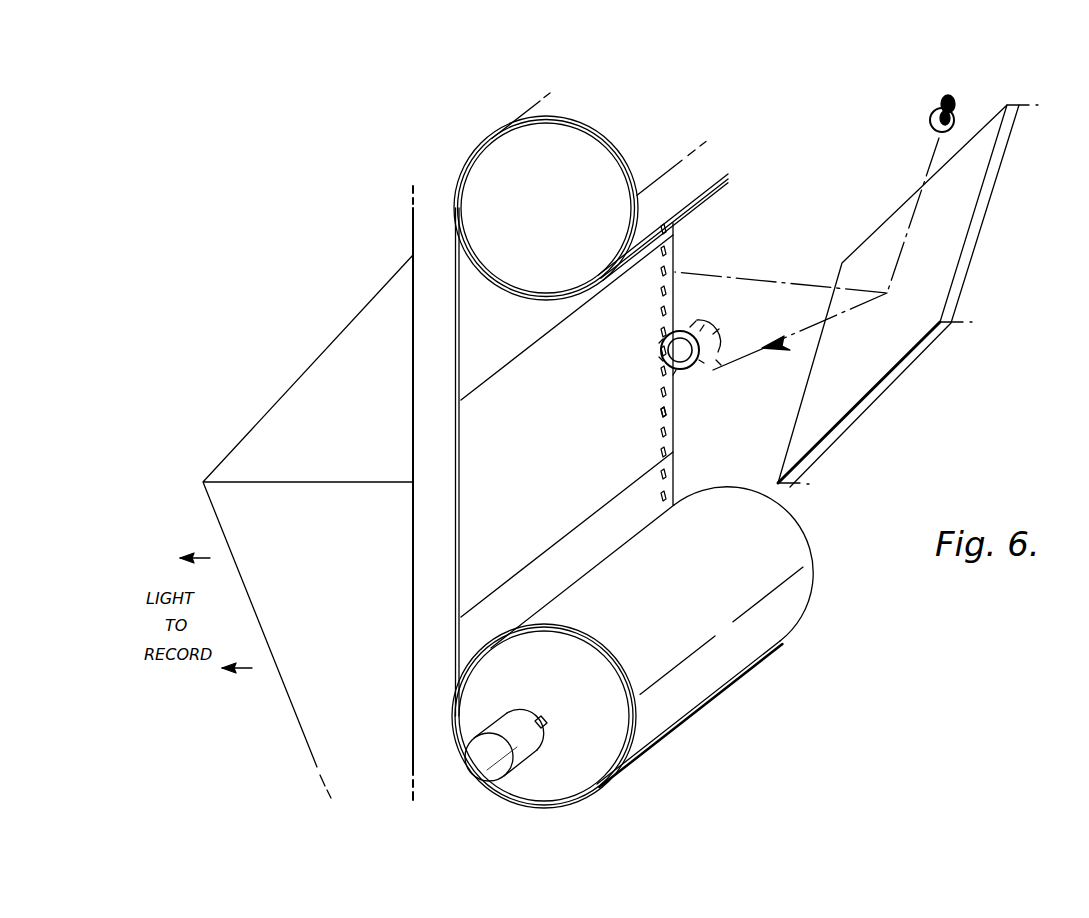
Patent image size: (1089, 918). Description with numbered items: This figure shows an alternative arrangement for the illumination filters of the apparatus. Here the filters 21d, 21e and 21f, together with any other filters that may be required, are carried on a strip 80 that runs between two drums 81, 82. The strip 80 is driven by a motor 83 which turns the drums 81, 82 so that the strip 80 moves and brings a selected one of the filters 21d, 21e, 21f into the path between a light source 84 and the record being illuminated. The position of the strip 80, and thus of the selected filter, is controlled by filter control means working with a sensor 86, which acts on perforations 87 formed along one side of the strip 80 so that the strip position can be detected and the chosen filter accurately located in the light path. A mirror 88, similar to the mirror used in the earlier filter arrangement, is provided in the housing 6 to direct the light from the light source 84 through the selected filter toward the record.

The housing 6 is at (413, 216).
The strip 80 is at (455, 480).
The drum 81 is at (560, 216).
The drum 82 is at (545, 668).
The motor 83 is at (546, 717).
The light source 84 is at (954, 118).
The sensor 86 is at (700, 337).
The perforations 87 is at (667, 412).
The mirror 88 is at (877, 394).
The filter 21d is at (500, 361).
The filter 21e is at (522, 514).
The filter 21f is at (523, 613).